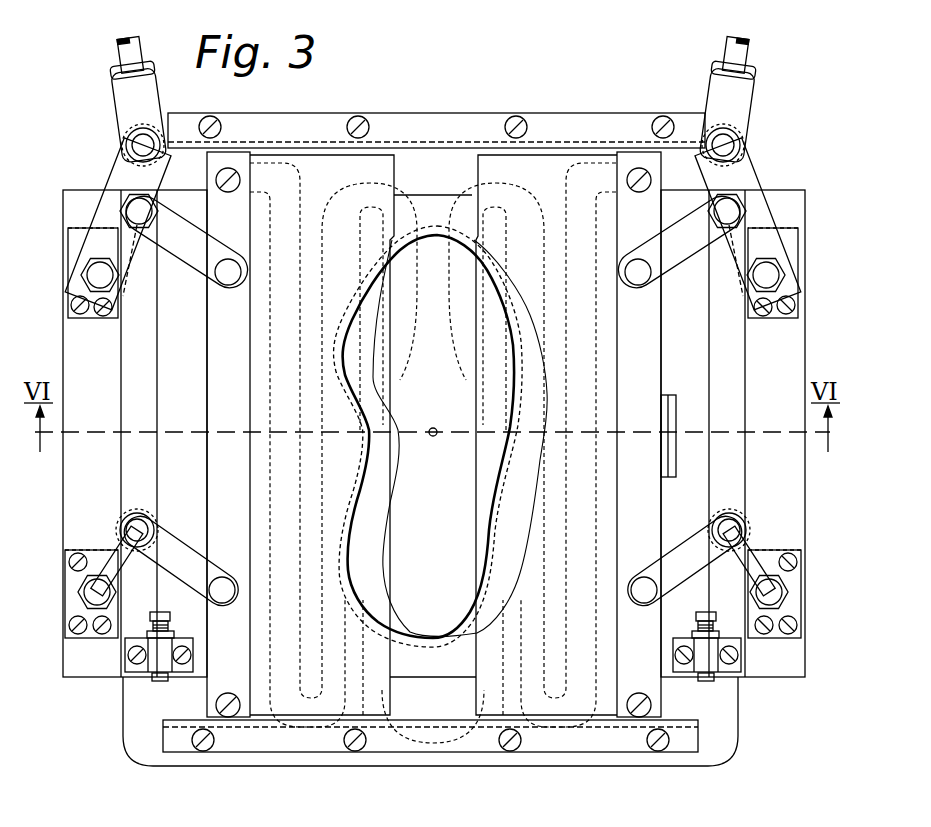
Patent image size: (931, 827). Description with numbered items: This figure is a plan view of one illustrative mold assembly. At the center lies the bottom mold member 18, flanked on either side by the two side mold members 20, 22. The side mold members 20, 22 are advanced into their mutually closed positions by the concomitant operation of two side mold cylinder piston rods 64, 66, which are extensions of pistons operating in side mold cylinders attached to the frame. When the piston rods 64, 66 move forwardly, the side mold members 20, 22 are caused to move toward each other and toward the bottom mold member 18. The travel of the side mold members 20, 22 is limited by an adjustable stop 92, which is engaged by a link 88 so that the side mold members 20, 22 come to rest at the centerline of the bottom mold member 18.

The bottom mold member 18 is at (444, 560).
The side mold member 20 is at (391, 150).
The side mold member 22 is at (478, 150).
The side mold cylinder piston rod 64 is at (143, 47).
The side mold cylinder piston rod 66 is at (753, 50).
The link 88 is at (180, 545).
The adjustable stop 92 is at (160, 612).